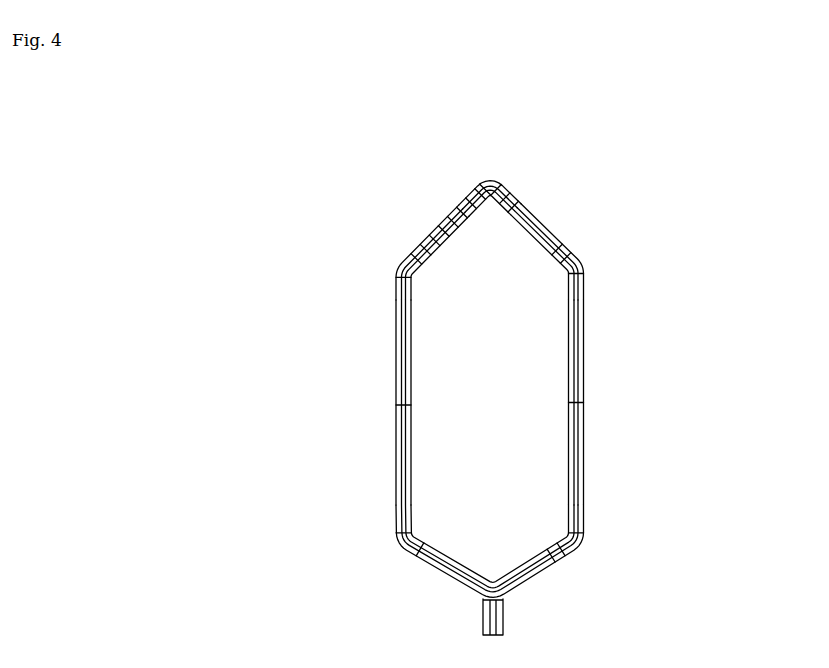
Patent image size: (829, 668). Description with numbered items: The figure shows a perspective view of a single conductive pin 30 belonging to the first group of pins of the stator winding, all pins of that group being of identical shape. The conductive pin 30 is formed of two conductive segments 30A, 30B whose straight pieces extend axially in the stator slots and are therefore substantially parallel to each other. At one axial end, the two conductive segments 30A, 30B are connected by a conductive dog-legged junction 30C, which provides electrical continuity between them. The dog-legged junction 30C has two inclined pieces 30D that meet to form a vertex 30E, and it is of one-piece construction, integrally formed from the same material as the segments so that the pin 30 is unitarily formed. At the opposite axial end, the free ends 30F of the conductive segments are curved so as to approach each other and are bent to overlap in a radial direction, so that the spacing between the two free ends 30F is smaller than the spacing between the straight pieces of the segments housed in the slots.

The conductive pin 30 is at (203, 201).
The conductive segment 30A is at (403, 357).
The conductive segment 30B is at (577, 368).
The dog-legged junction 30C is at (518, 197).
The inclined pieces 30D is at (415, 249).
The vertex 30E is at (488, 179).
The free ends 30F is at (463, 579).